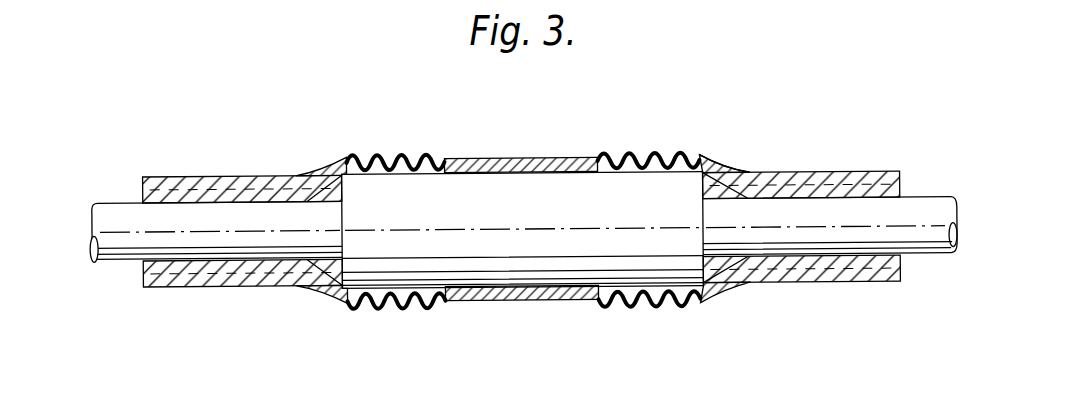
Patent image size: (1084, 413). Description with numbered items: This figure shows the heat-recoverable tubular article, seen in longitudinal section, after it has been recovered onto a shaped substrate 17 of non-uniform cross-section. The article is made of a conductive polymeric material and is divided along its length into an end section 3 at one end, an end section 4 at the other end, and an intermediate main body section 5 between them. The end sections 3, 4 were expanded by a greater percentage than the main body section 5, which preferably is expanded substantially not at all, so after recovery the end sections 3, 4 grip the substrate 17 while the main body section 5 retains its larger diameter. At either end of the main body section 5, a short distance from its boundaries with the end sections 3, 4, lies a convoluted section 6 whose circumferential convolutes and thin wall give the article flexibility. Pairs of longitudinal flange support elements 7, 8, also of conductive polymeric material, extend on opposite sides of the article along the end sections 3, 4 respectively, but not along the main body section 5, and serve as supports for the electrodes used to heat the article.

The end section 3 is at (755, 167).
The end section 4 is at (281, 292).
The intermediate main body section 5 is at (509, 155).
The convoluted section 6 is at (655, 154).
The longitudinal flange support element 7 is at (838, 174).
The longitudinal flange support element 8 is at (203, 174).
The shaped substrate 17 is at (918, 208).